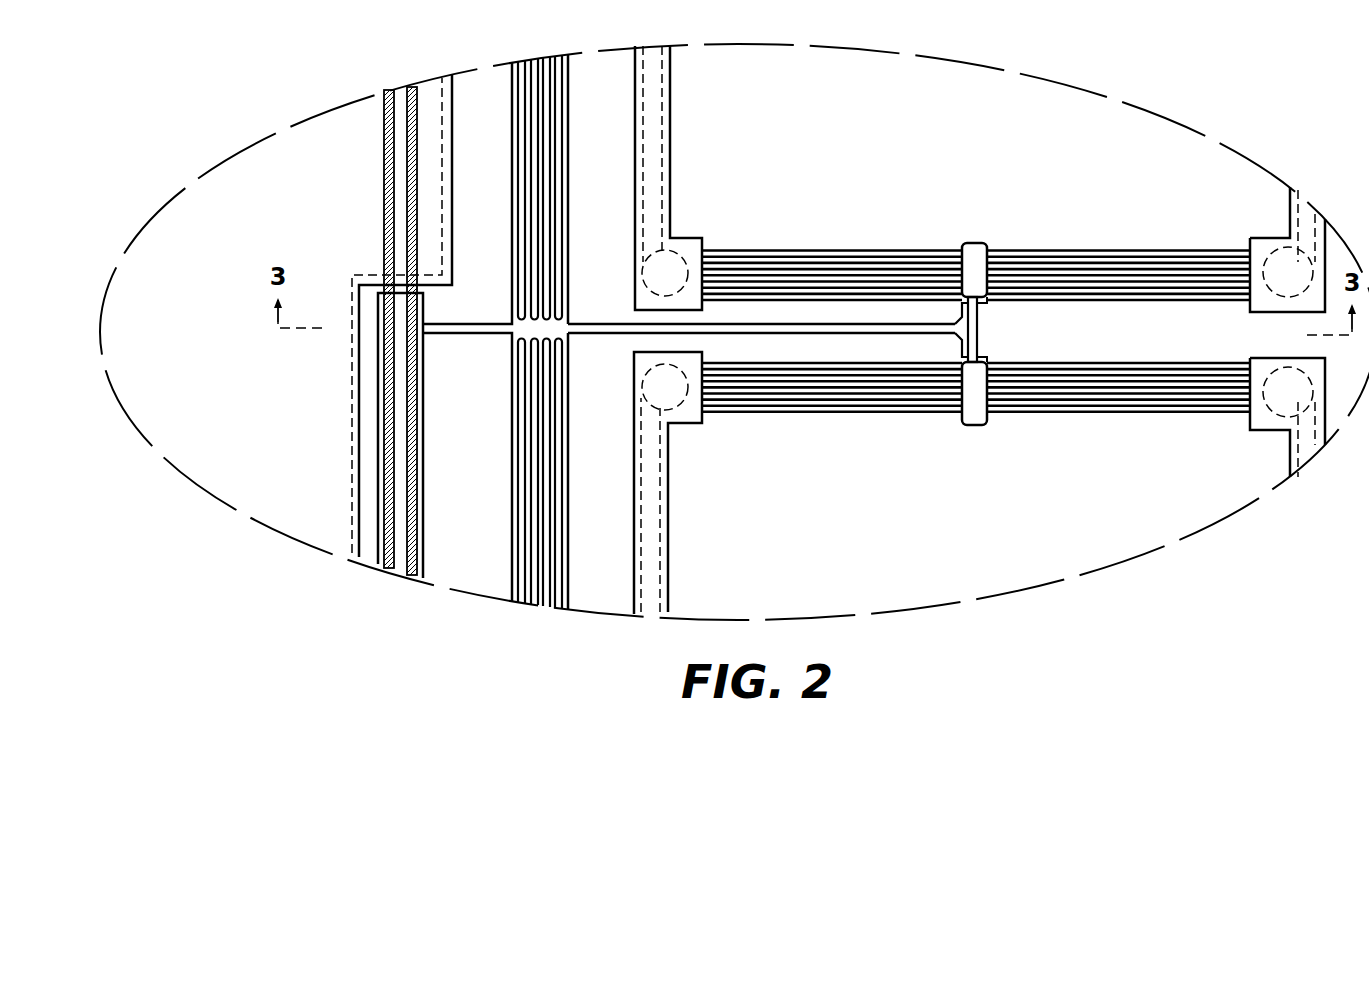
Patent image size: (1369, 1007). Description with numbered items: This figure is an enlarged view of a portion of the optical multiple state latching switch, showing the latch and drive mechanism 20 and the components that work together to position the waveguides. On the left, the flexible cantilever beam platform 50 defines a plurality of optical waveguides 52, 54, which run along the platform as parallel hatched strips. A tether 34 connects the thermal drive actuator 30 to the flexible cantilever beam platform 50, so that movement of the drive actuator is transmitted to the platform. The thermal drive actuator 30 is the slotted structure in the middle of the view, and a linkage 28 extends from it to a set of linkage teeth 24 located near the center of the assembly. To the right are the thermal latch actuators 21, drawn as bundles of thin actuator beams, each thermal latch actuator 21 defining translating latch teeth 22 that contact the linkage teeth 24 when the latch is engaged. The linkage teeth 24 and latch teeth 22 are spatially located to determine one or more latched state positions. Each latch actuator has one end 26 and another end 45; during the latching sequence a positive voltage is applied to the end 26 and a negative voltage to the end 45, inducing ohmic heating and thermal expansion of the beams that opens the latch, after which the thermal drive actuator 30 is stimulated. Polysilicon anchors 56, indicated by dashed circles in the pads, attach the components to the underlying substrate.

The flexure interconnect assembly 20 is at (954, 330).
The thermal latch actuator 21 is at (879, 250).
The latch teeth 22 is at (992, 356).
The linkage teeth 24 is at (960, 307).
The end of latch actuator 26 is at (1275, 240).
The linkage 28 is at (822, 333).
The thermal drive actuator 30 is at (689, 332).
The tether 34 is at (458, 335).
The end of latch actuator 45 is at (679, 240).
The flexible cantilever beam platform 50 is at (399, 326).
The optical waveguide 52 is at (385, 455).
The optical waveguide 54 is at (410, 450).
The polysilicon anchor 56 is at (660, 263).